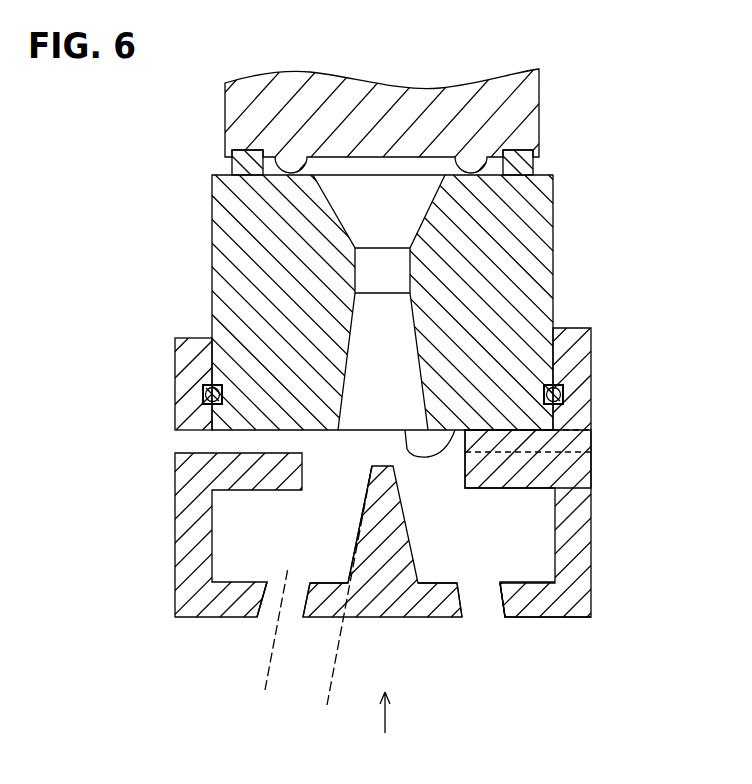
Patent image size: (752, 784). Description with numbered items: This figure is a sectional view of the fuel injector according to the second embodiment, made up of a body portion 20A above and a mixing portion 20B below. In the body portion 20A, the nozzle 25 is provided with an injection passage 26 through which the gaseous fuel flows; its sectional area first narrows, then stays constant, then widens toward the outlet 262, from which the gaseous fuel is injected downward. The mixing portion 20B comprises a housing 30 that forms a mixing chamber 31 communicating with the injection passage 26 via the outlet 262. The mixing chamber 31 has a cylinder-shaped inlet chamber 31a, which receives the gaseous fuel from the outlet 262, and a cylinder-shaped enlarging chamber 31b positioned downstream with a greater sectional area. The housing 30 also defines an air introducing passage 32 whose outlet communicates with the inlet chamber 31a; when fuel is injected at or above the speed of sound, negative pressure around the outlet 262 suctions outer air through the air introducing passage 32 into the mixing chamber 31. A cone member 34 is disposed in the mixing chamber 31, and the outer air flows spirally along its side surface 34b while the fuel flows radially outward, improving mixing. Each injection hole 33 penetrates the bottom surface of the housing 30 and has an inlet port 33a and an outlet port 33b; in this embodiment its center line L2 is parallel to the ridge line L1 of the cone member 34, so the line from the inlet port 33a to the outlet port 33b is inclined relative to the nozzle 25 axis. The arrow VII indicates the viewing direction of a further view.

The body portion 20A is at (376, 263).
The mixing portion 20B is at (391, 529).
The nozzle 25 is at (237, 212).
The injection passage 26 is at (400, 212).
The outlet 262 is at (450, 455).
The housing 30 is at (175, 519).
The mixing chamber 31 is at (675, 455).
The inlet chamber 31a is at (443, 473).
The enlarging chamber 31b is at (522, 543).
The air introducing passage 32 is at (190, 440).
The injection hole 33 is at (295, 607).
The inlet port 33a is at (307, 582).
The outlet port 33b is at (257, 618).
The cone member 34 is at (387, 545).
The side surface 34b is at (360, 527).
The ridge line L1 is at (345, 598).
The center line L2 is at (271, 642).
The view direction arrow VII is at (384, 727).